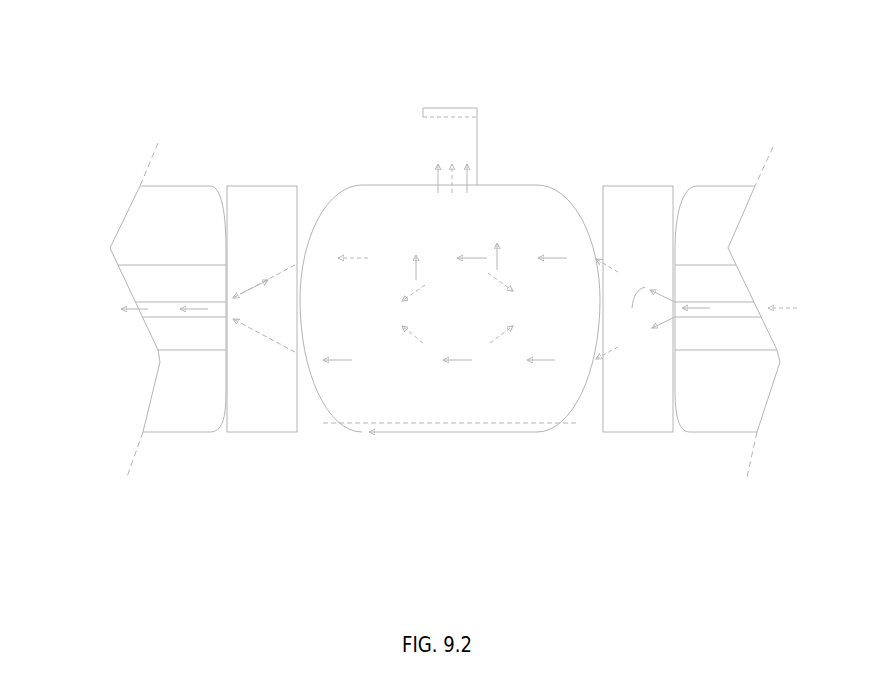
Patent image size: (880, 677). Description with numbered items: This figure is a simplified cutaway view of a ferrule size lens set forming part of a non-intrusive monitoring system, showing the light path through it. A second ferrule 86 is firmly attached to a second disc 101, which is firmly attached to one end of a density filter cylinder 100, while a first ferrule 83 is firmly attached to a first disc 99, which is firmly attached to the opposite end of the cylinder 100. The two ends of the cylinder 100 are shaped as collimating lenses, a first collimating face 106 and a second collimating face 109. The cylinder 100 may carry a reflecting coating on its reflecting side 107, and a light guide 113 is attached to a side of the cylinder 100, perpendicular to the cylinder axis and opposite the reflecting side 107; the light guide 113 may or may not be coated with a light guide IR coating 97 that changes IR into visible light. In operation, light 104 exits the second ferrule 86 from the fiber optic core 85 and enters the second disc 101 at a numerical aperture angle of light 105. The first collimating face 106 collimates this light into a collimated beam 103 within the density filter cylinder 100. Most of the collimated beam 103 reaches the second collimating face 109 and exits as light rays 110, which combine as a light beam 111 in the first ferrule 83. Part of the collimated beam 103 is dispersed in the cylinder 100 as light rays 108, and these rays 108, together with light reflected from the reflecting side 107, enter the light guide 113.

The first ferrule 83 is at (142, 215).
The fiber optic core 85 is at (727, 310).
The second ferrule 86 is at (702, 208).
The light guide IR coating 97 is at (452, 108).
The first disc 99 is at (245, 215).
The density filter cylinder 100 is at (408, 325).
The second disc 101 is at (613, 215).
The collimated beam 103 is at (542, 362).
The light 104 is at (777, 308).
The numerical aperture angle of light 105 is at (633, 310).
The first collimating face 106 is at (582, 400).
The reflecting side 107 is at (450, 422).
The light rays 108 is at (408, 340).
The second collimating face 109 is at (318, 400).
The light rays 110 is at (272, 338).
The light beam 111 is at (112, 310).
The light guide 113 is at (455, 152).